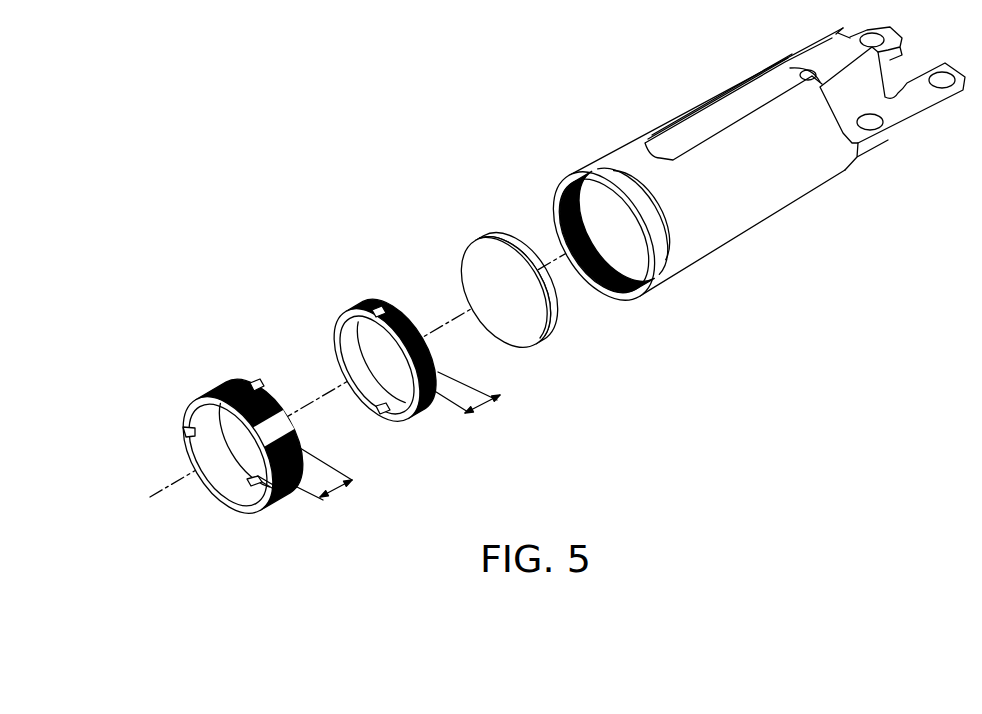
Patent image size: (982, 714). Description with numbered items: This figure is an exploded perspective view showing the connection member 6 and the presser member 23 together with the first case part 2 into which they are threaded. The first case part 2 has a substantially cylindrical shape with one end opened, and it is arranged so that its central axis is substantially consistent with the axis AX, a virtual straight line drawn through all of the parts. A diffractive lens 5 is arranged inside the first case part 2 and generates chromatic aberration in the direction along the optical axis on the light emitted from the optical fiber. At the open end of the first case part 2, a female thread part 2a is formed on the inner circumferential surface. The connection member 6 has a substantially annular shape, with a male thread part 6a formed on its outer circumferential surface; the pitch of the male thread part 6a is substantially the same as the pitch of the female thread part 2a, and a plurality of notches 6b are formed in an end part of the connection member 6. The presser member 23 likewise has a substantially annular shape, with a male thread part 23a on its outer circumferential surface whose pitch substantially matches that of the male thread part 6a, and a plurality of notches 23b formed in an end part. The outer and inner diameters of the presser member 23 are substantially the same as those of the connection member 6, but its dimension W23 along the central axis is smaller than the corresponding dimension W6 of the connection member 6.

The first case part 2 is at (748, 187).
The female thread part 2a is at (622, 302).
The diffractive lens 5 is at (470, 246).
The connection member 6 is at (211, 439).
The male thread part 6a is at (276, 504).
The notches 6b is at (252, 346).
The presser member 23 is at (375, 358).
The male thread part 23a is at (428, 408).
The notches 23b is at (376, 306).
The axis AX is at (185, 483).
The dimension of the connection member W6 is at (325, 481).
The dimension of the presser member W23 is at (477, 398).